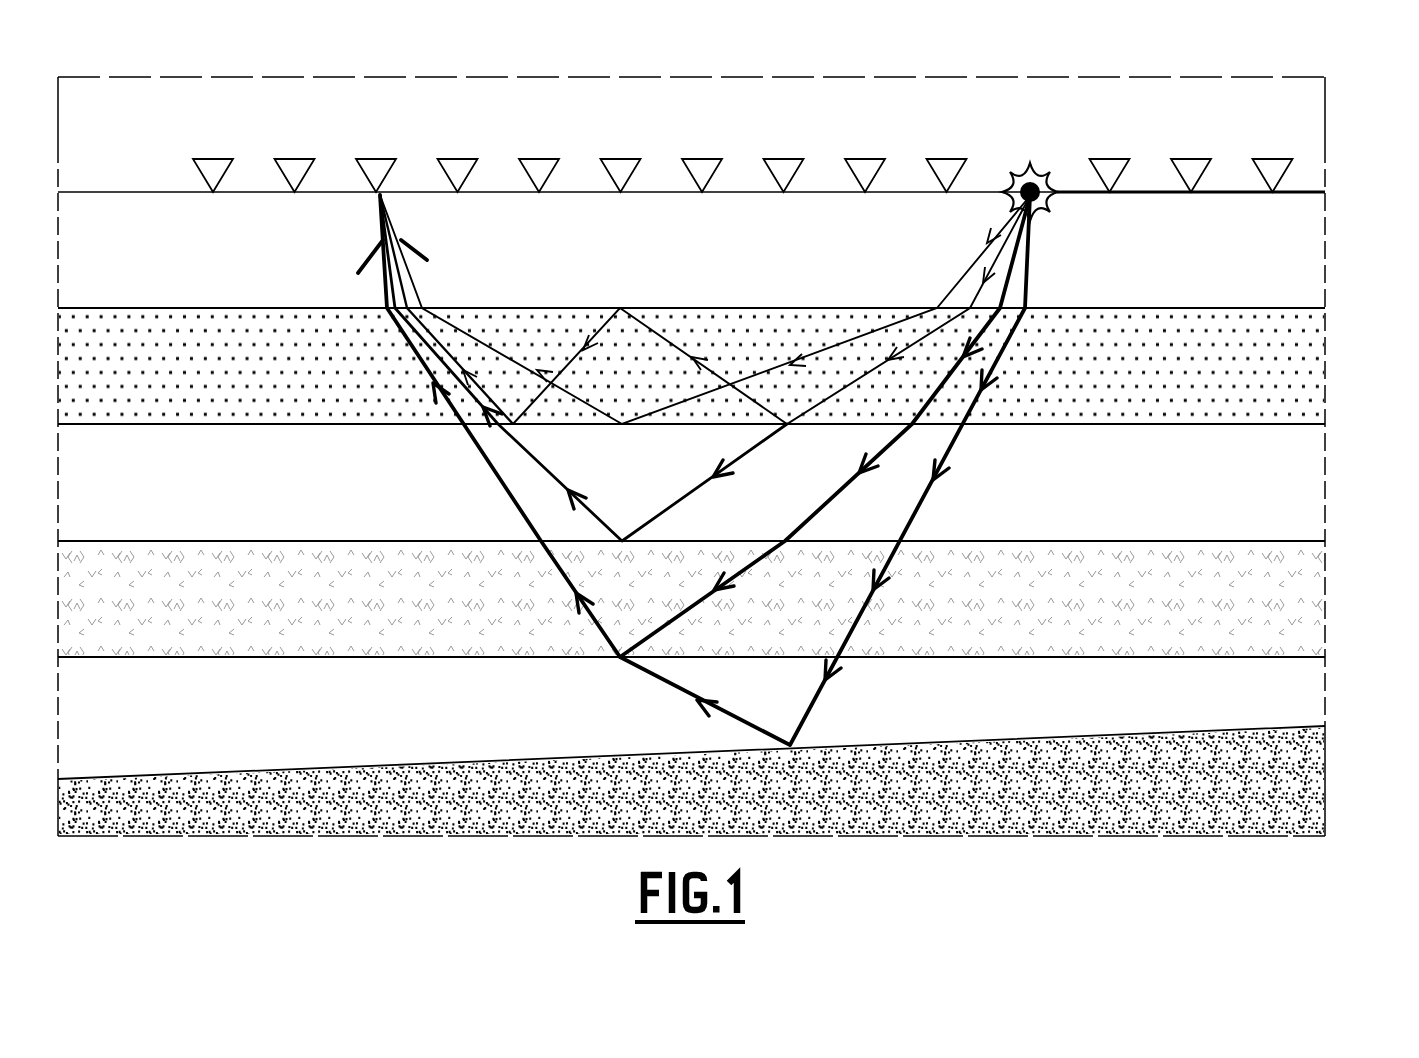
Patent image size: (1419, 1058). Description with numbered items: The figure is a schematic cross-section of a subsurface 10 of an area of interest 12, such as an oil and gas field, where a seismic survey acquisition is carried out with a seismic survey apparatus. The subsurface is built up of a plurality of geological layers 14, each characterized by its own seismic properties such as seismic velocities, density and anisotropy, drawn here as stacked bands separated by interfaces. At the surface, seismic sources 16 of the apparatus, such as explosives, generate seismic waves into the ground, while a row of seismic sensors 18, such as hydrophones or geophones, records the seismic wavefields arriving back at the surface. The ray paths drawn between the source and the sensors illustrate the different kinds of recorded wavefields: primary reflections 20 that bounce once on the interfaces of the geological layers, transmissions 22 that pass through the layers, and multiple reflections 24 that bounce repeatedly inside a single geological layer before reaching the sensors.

The subsurface 10 is at (1333, 845).
The area of interest 12 is at (1063, 160).
The geological layers 14 is at (691, 534).
The seismic sources 16 is at (1047, 172).
The seismic sensors 18 is at (377, 158).
The primary reflections 20 is at (868, 333).
The transmissions 22 is at (761, 446).
The multiple reflections 24 is at (673, 345).